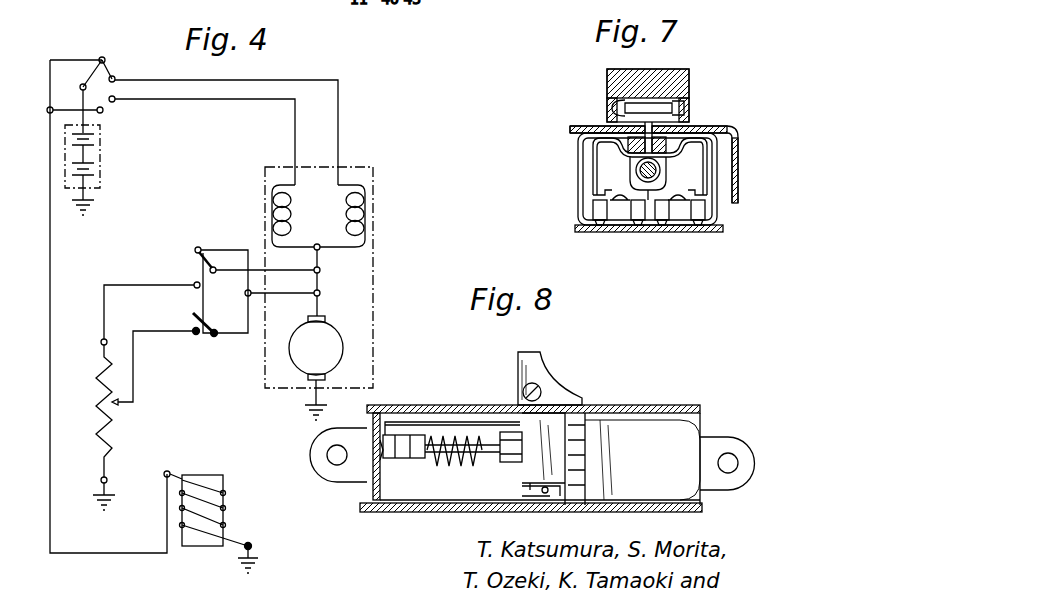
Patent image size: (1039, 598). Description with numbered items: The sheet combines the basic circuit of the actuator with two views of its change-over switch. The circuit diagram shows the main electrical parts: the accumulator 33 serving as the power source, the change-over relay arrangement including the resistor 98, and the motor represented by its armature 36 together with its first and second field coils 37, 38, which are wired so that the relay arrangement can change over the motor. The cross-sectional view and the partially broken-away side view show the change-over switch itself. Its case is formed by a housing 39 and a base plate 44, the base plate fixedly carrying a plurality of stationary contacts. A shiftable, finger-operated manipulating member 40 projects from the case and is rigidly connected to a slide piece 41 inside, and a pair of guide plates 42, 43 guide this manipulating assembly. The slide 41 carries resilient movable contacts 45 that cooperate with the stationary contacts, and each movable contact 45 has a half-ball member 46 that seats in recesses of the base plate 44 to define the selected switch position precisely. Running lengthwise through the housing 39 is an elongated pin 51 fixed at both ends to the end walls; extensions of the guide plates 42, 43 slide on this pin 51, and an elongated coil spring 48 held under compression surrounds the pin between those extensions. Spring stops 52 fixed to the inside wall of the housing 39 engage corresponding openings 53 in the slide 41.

In FIG. 4, the accumulator 33 is at (101, 152).
In FIG. 4, the armature 36 is at (343, 348).
In FIG. 4, the first field coil 37 is at (273, 206).
In FIG. 4, the second field coil 38 is at (364, 201).
In FIG. 7, the housing 39 is at (578, 150).
In FIG. 8, the housing 39 is at (373, 492).
In FIG. 7, the manipulating member 40 is at (690, 78).
In FIG. 8, the manipulating member 40 is at (552, 386).
In FIG. 7, the slide piece 41 is at (592, 178).
In FIG. 8, the slide piece 41 is at (565, 434).
In FIG. 7, the guide plate 42 is at (636, 172).
In FIG. 8, the guide plate 42 is at (427, 420).
In FIG. 7, the guide plate 43 is at (657, 150).
In FIG. 7, the base plate 44 is at (578, 233).
In FIG. 8, the base plate 44 is at (703, 512).
In FIG. 7, the resilient movable contact 45 is at (600, 212).
In FIG. 8, the resilient movable contact 45 is at (552, 490).
In FIG. 7, the half-ball member 46 is at (700, 222).
In FIG. 7, the coil spring 48 is at (638, 195).
In FIG. 8, the coil spring 48 is at (440, 466).
In FIG. 7, the pin 51 is at (648, 200).
In FIG. 8, the pin 51 is at (466, 462).
In FIG. 8, the spring stop 52 is at (405, 458).
In FIG. 8, the opening 53 is at (505, 440).
In FIG. 4, the resistor 98 is at (94, 408).